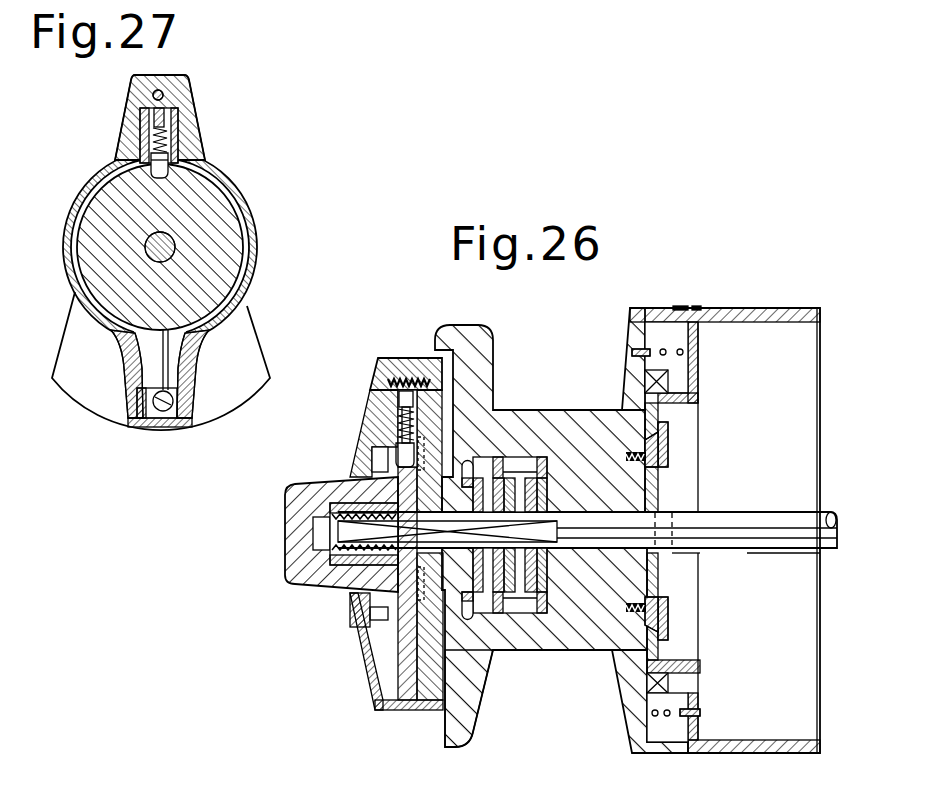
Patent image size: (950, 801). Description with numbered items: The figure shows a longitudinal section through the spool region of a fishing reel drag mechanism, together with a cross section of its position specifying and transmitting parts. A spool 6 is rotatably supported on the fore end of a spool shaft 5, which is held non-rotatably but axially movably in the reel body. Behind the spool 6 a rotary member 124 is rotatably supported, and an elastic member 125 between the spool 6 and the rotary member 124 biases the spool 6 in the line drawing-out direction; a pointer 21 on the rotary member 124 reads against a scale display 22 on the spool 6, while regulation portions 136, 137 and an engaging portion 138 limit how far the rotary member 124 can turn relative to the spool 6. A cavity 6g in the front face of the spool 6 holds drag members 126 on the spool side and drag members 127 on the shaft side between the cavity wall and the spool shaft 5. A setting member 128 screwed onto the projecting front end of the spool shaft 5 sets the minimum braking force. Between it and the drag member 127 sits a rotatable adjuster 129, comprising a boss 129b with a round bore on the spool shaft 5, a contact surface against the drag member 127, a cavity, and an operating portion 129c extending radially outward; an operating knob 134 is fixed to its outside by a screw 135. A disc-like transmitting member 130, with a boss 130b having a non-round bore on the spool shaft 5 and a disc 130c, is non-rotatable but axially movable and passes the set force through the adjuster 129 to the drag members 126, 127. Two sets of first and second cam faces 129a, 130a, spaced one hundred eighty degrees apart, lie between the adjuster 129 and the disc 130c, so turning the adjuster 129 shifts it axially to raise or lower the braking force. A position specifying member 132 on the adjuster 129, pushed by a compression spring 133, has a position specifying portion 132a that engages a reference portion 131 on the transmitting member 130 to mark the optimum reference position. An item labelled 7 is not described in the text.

In FIG. 27, the spool shaft 5 is at (175, 257).
In FIG. 26, the spool shaft 5 is at (742, 515).
In FIG. 26, the spool 6 is at (603, 410).
In FIG. 26, the cavity 6g is at (527, 463).
In FIG. 26, the pin 7 is at (543, 607).
In FIG. 26, the pointer 21 is at (700, 307).
In FIG. 26, the scale display 22 is at (678, 307).
In FIG. 26, the rotary member 124 is at (760, 307).
In FIG. 26, the elastic member 125 is at (662, 345).
In FIG. 26, the drag members at the spool side 126 is at (472, 690).
In FIG. 26, the drag members at the spool shaft side 127 is at (525, 613).
In FIG. 26, the setting member 128 is at (288, 548).
In FIG. 27, the adjuster 129 is at (232, 188).
In FIG. 26, the adjuster 129 is at (415, 455).
In FIG. 26, the first cam face 129a is at (398, 463).
In FIG. 26, the boss 129b is at (410, 572).
In FIG. 26, the operating portion 129c is at (370, 703).
In FIG. 27, the transmitting member 130 is at (225, 237).
In FIG. 26, the transmitting member 130 is at (407, 493).
In FIG. 26, the second cam face 130a is at (377, 465).
In FIG. 26, the boss 130b is at (385, 597).
In FIG. 26, the disc 130c is at (393, 607).
In FIG. 27, the reference portion 131 is at (168, 177).
In FIG. 26, the reference portion 131 is at (430, 437).
In FIG. 27, the position specifying member 132 is at (153, 163).
In FIG. 26, the position specifying member 132 is at (403, 417).
In FIG. 27, the position specifying portion 132a is at (177, 152).
In FIG. 26, the position specifying portion 132a is at (398, 437).
In FIG. 27, the compression spring 133 is at (171, 130).
In FIG. 26, the compression spring 133 is at (397, 390).
In FIG. 27, the operating knob 134 is at (177, 80).
In FIG. 26, the operating knob 134 is at (378, 370).
In FIG. 27, the screw 135 is at (163, 75).
In FIG. 26, the screw 135 is at (405, 377).
In FIG. 26, the regulation portion 136 is at (702, 678).
In FIG. 26, the regulation portion 137 is at (668, 381).
In FIG. 26, the engaging portion 138 is at (670, 690).